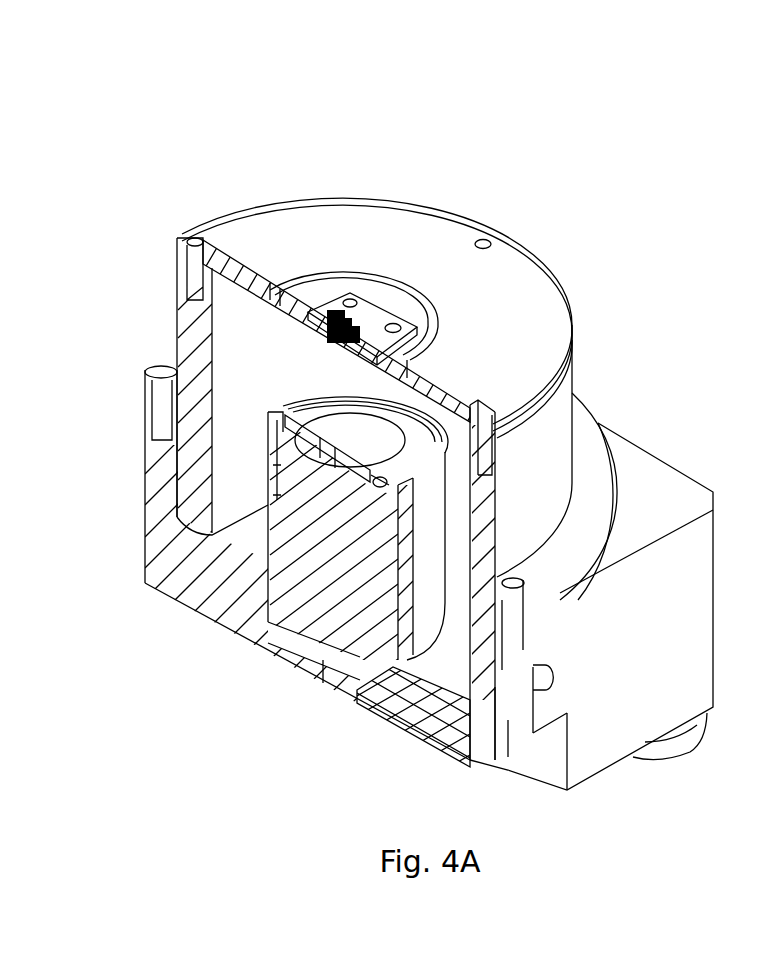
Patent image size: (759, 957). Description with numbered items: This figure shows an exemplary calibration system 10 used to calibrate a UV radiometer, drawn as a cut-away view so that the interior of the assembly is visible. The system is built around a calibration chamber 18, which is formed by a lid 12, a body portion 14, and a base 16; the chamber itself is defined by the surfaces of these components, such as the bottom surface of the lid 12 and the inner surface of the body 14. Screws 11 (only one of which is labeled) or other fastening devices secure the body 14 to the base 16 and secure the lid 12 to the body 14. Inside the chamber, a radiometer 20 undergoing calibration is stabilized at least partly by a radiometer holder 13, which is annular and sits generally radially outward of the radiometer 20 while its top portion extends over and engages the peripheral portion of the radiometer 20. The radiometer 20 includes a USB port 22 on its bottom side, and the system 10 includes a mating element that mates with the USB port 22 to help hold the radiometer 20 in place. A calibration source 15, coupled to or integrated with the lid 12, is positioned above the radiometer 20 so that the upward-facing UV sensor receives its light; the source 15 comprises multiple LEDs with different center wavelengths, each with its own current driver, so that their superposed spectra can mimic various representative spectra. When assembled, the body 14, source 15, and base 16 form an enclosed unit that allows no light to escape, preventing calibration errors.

The calibration system 10 is at (453, 133).
The screws 11 is at (195, 273).
The lid 12 is at (477, 283).
The radiometer holder 13 is at (418, 522).
The body portion 14 is at (589, 386).
The calibration source 15 is at (393, 314).
The base 16 is at (141, 515).
The calibration chamber 18 is at (585, 294).
The radiometer 20 is at (344, 448).
The USB port 22 is at (379, 498).